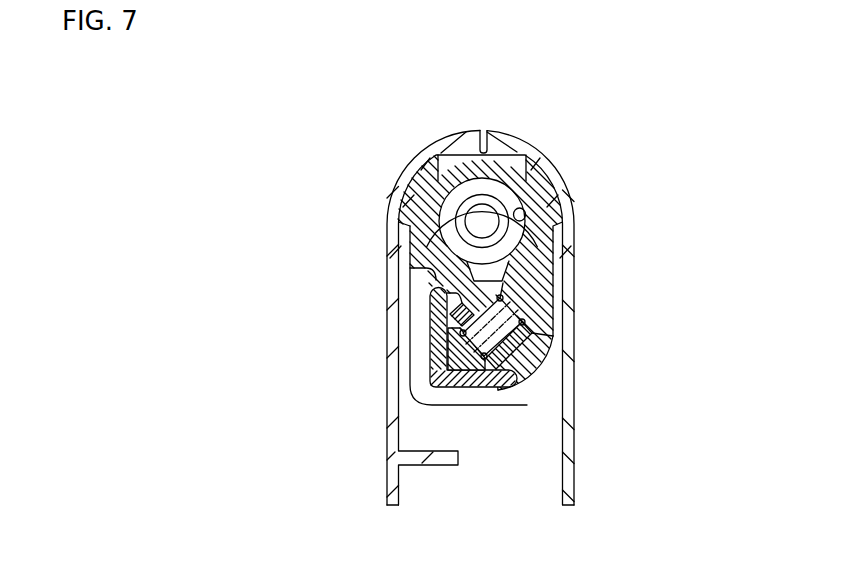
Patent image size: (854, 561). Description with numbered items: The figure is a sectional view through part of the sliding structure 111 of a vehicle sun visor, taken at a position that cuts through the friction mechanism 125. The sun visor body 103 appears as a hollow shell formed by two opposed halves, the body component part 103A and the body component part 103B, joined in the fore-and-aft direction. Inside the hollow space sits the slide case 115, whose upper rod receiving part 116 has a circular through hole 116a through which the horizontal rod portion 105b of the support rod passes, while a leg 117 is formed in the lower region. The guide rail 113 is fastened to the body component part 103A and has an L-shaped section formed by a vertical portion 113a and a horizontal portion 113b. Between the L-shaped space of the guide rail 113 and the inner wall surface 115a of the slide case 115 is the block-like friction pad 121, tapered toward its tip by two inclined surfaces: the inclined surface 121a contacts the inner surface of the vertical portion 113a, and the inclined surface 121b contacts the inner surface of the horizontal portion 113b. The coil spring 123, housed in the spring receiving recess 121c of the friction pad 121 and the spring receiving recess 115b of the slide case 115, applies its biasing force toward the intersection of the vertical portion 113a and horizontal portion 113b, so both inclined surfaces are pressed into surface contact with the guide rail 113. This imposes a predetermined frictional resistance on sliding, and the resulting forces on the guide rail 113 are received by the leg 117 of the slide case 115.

The sun visor body 103 is at (447, 135).
The body component part 103A is at (565, 488).
The body component part 103B is at (387, 465).
The horizontal rod portion 105b is at (450, 215).
The sliding structure 111 is at (533, 177).
The guide rail 113 is at (406, 414).
The vertical portion 113a is at (430, 345).
The horizontal portion 113b is at (465, 387).
The slide case 115 is at (440, 223).
The inner wall surface 115a is at (447, 310).
The spring receiving recess 115b is at (503, 315).
The rod receiving part 116 is at (500, 172).
The circular through hole 116a is at (527, 218).
The leg 117 is at (453, 407).
The friction pad 121 is at (571, 328).
The inclined surface 121a is at (455, 336).
The inclined surface 121b is at (527, 400).
The spring receiving recess 121c is at (505, 335).
The coil spring 123 is at (447, 362).
The friction mechanism 125 is at (515, 367).